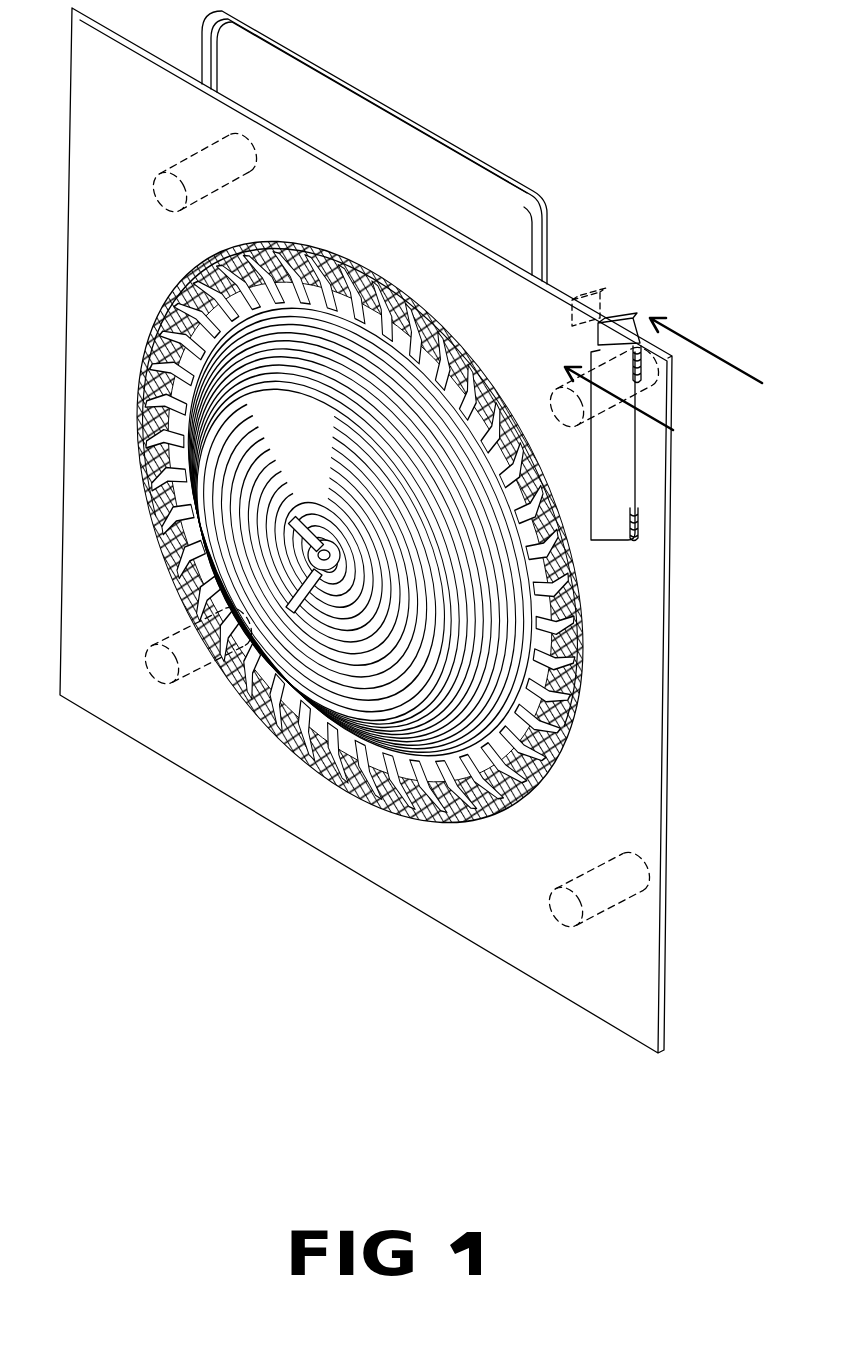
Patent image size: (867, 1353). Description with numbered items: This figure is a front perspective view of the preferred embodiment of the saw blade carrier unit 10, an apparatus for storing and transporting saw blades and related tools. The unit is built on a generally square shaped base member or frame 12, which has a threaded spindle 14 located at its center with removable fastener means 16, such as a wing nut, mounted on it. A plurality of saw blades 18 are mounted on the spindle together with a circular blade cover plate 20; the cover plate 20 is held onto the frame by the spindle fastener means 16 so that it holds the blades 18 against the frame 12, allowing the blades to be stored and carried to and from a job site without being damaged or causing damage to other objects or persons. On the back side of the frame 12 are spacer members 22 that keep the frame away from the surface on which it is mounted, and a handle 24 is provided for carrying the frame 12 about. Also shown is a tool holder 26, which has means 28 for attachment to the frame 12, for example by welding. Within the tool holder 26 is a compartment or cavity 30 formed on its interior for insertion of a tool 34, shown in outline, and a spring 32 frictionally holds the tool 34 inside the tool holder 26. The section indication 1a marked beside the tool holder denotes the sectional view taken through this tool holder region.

The saw blade carrier unit 10 is at (553, 88).
The base member or frame 12 is at (668, 658).
The threaded spindle 14 is at (343, 583).
The removable fastener means 16 is at (312, 530).
The saw blades 18 is at (477, 760).
The circular blade cover plate 20 is at (385, 688).
The spacer members 22 is at (230, 165).
The handle 24 is at (326, 78).
The tool holder 26 is at (623, 483).
The means for attachment 28 is at (640, 540).
The compartment or cavity 30 is at (650, 336).
The spring 32 is at (622, 323).
The tool 34 is at (593, 294).
The section line 1a is at (689, 388).